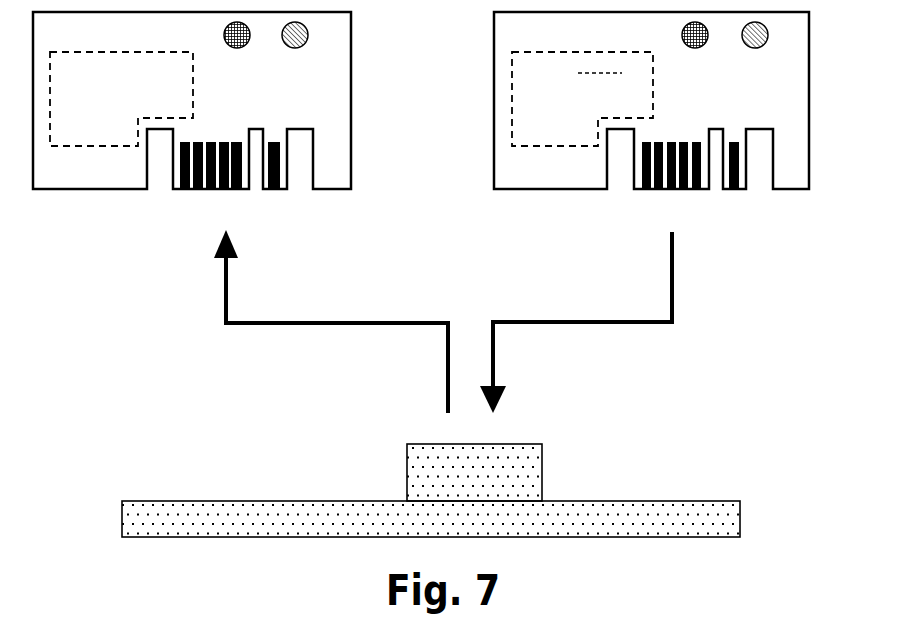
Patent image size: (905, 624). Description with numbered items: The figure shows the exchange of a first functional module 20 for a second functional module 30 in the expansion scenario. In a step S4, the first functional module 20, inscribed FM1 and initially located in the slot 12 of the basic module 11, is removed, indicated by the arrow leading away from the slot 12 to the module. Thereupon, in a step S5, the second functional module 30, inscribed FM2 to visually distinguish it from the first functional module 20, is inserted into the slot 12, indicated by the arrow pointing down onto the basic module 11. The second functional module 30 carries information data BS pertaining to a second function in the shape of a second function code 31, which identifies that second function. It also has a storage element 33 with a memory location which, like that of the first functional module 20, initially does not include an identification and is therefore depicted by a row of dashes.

The first functional module 20 is at (351, 52).
The second functional module 30 is at (613, 100).
The second function code 31 is at (501, 103).
The storage element 33 is at (512, 135).
The basic module 11 is at (664, 517).
The slot 12 is at (530, 467).
The step S4 is at (228, 297).
The step S5 is at (672, 294).